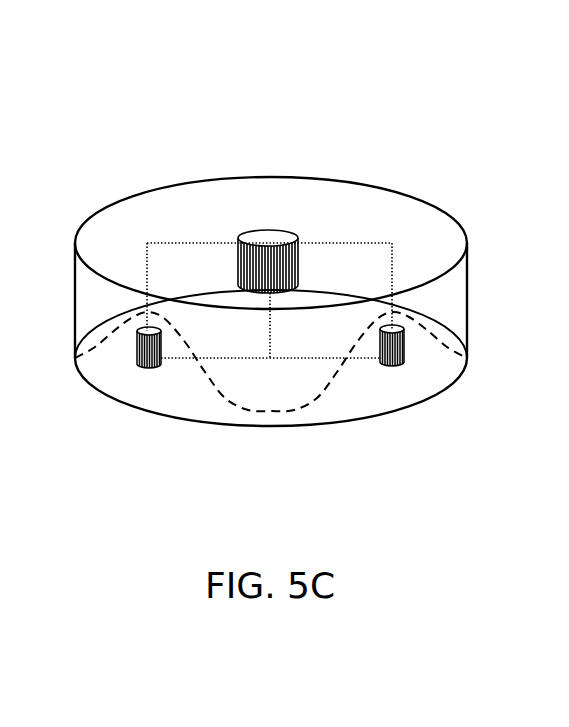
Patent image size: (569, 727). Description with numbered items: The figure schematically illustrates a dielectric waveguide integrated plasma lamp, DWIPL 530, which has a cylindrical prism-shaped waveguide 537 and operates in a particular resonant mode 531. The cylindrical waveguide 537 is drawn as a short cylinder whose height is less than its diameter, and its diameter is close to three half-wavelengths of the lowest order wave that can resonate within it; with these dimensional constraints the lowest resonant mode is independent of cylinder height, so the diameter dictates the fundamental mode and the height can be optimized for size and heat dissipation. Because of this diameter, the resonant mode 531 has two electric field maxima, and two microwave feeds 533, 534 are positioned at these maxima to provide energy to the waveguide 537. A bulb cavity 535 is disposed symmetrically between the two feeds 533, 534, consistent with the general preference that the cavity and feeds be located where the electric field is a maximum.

The DWIPL 530 is at (121, 147).
The resonant mode 531 is at (446, 326).
The feed 533 is at (399, 380).
The feed 534 is at (148, 381).
The bulb cavity 535 is at (266, 214).
The cylindrical waveguide 537 is at (389, 174).